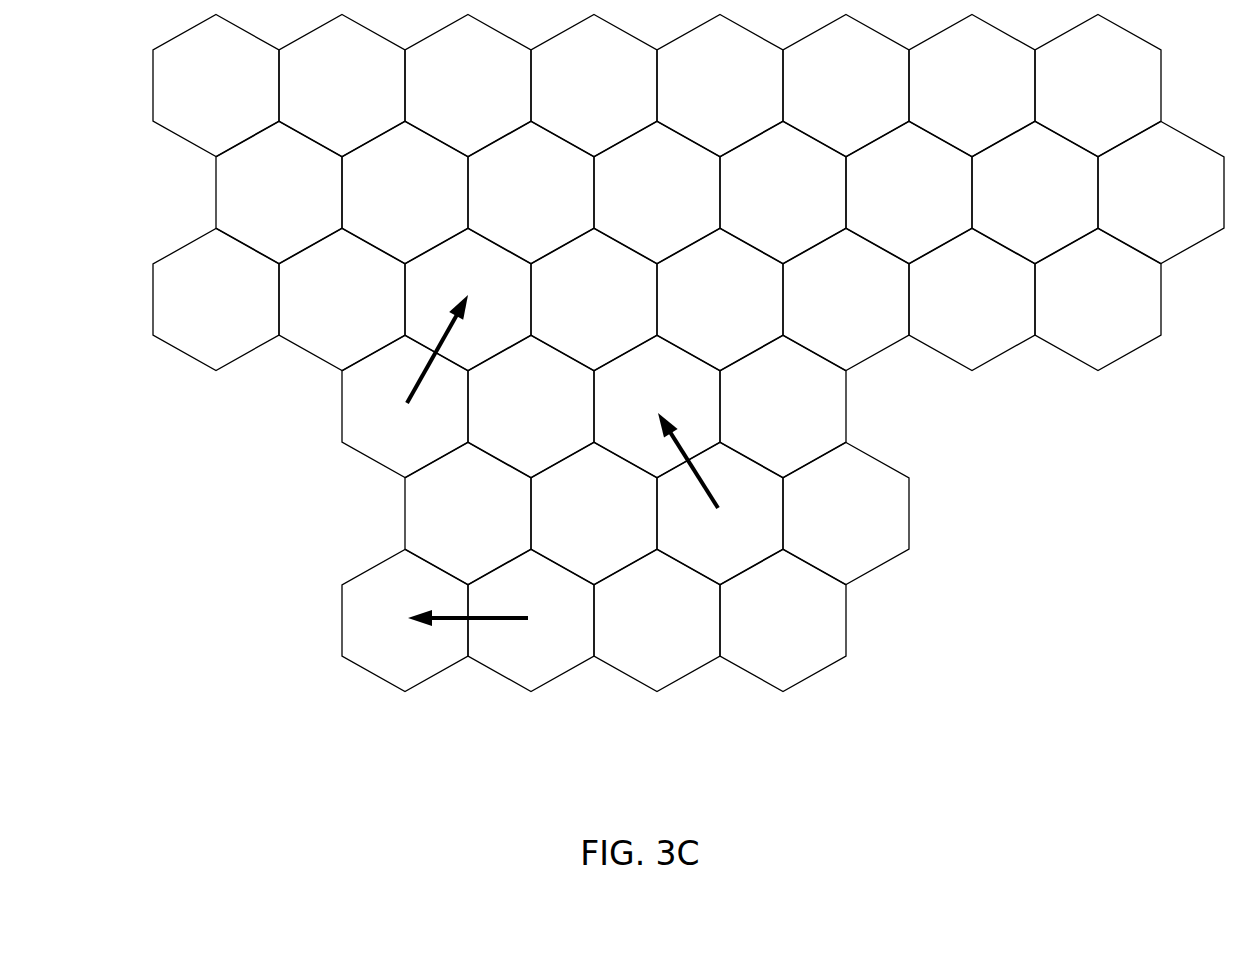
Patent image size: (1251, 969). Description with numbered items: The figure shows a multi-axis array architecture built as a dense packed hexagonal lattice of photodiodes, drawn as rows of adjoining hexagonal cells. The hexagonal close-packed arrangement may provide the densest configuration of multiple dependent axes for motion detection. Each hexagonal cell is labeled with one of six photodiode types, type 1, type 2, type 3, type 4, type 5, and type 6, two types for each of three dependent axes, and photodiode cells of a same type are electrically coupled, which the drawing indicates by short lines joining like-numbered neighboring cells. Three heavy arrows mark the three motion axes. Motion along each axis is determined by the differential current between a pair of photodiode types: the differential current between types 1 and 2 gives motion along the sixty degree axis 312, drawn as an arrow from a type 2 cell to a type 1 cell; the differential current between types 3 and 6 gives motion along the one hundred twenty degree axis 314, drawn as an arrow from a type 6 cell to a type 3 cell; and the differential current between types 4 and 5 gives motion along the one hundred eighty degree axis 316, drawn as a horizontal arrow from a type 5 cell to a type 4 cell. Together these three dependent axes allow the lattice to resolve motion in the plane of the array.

The photodiode type 1 is at (783, 460).
The photodiode type 2 is at (531, 246).
The photodiode type 3 is at (783, 246).
The photodiode type 4 is at (499, 407).
The photodiode type 5 is at (625, 407).
The photodiode type 6 is at (846, 353).
The 60 degree axis 312 is at (427, 368).
The 120 degree axis 314 is at (693, 457).
The 180 degree axis 316 is at (468, 620).